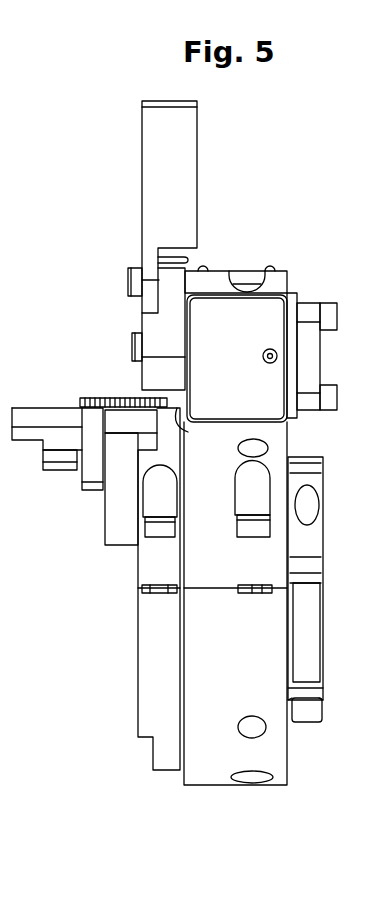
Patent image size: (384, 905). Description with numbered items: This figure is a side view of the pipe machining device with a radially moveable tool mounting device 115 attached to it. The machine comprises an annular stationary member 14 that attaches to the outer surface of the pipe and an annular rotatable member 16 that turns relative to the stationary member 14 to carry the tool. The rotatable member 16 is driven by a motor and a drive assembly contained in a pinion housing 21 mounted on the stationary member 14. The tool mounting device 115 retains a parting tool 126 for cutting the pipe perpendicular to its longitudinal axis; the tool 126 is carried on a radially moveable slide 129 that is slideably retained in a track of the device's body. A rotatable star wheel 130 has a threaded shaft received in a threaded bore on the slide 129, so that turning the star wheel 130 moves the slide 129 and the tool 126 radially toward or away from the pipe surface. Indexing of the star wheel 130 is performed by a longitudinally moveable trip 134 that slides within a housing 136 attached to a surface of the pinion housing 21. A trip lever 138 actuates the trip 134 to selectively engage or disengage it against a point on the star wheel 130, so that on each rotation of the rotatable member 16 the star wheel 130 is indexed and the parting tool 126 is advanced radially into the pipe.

The annular stationary member 14 is at (234, 787).
The annular rotatable member 16 is at (162, 771).
The pinion housing 21 is at (288, 281).
The radially moveable tool mounting device 115 is at (115, 548).
The parting tool 126 is at (56, 472).
The slide 129 is at (87, 490).
The star wheel 130 is at (86, 398).
The trip 134 is at (188, 432).
The housing 136 is at (142, 320).
The trip lever 138 is at (197, 141).